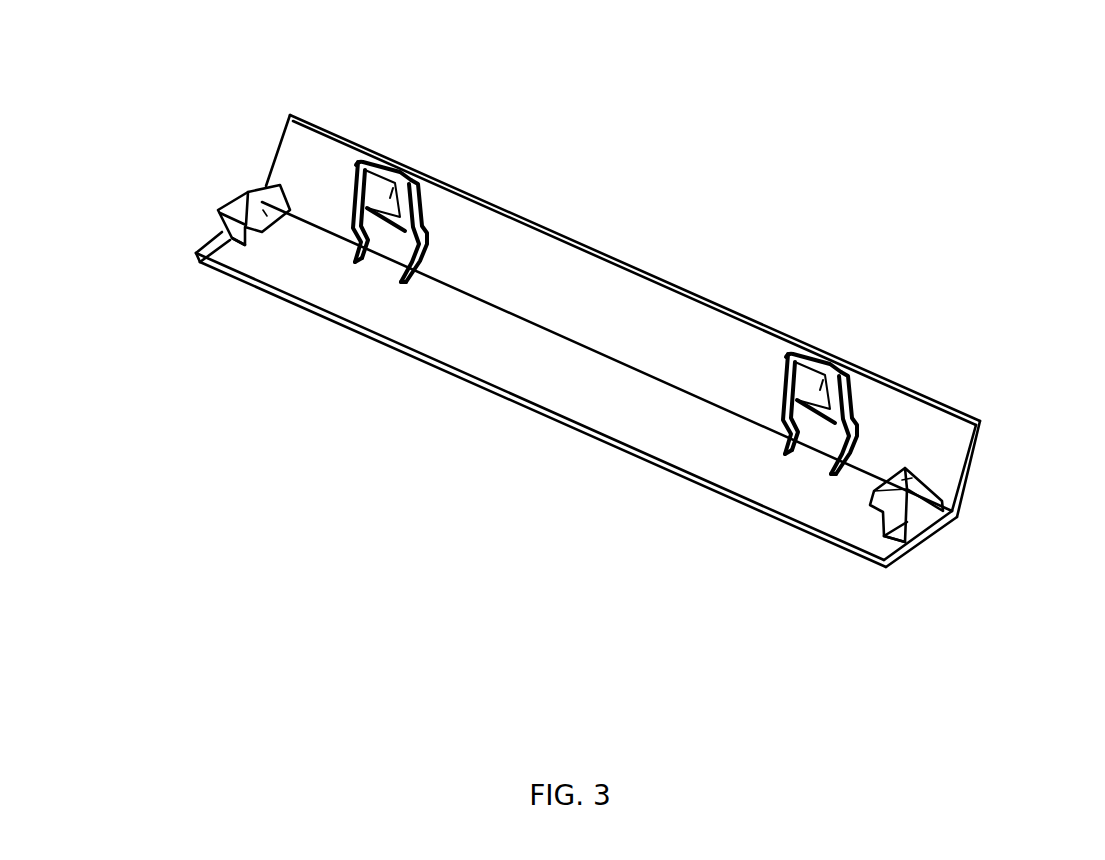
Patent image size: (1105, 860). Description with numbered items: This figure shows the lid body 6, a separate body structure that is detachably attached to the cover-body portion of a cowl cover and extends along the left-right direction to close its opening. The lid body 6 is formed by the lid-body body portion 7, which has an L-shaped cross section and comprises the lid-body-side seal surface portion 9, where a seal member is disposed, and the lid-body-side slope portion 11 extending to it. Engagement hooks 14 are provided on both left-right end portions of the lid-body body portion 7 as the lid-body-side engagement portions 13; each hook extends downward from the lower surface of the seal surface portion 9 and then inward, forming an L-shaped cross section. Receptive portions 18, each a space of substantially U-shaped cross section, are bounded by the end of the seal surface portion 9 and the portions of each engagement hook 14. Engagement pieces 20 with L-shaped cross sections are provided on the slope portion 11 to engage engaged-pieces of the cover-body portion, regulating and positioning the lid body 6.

The lid body 6 is at (637, 332).
The lid-body body portion 7 is at (576, 411).
The lid-body-side seal surface portion 9 is at (647, 425).
The lid-body-side slope portion 11 is at (603, 283).
The lid-body-side engagement portion 13 is at (496, 281).
The engagement hook 14 is at (204, 200).
The receptive portion 18 is at (253, 243).
The engagement piece 20 is at (393, 197).